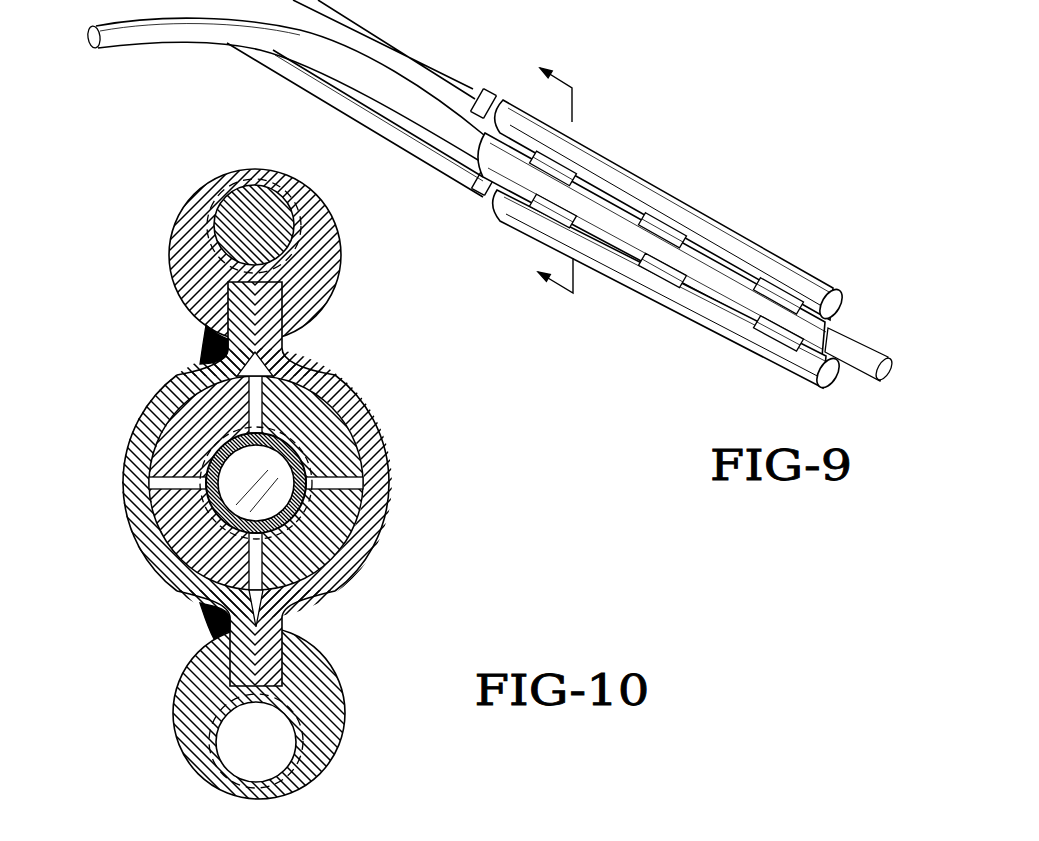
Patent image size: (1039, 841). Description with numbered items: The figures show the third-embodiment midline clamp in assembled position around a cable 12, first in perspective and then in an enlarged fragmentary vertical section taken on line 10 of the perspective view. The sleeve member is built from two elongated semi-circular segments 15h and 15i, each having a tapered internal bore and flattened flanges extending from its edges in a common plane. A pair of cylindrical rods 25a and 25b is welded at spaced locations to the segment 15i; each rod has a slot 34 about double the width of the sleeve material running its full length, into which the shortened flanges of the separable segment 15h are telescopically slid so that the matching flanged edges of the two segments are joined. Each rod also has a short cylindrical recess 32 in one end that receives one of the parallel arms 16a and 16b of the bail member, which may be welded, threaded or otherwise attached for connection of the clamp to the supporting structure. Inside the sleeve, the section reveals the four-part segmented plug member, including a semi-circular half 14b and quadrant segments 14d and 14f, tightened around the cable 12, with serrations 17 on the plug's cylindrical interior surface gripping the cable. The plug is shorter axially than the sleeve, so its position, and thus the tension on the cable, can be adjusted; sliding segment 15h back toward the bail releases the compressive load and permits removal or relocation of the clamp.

In FIG. 9, the section line 10 is at (537, 169).
In FIG. 10, the cable 12 is at (212, 457).
In FIG. 9, the cable 12 is at (140, 32).
In FIG. 10, the semi-circular half of plug member 14b is at (183, 392).
In FIG. 10, the quadrant segment of plug 14d is at (330, 553).
In FIG. 10, the quadrant segment of plug 14f is at (185, 553).
In FIG. 10, the semi-circular sleeve segment 15h is at (392, 543).
In FIG. 10, the semi-circular sleeve segment 15i is at (122, 542).
In FIG. 9, the semi-circular sleeve segment 15i is at (627, 245).
In FIG. 10, the bail arm 16a is at (262, 215).
In FIG. 10, the bail arm 16b is at (267, 745).
In FIG. 10, the serrations 17 is at (312, 512).
In FIG. 10, the cylindrical rod 25a is at (330, 238).
In FIG. 9, the cylindrical rod 25a is at (750, 242).
In FIG. 10, the cylindrical rod 25b is at (338, 685).
In FIG. 9, the cylindrical rod 25b is at (703, 317).
In FIG. 10, the cylindrical recess 32 is at (213, 200).
In FIG. 10, the slot 34 is at (270, 283).